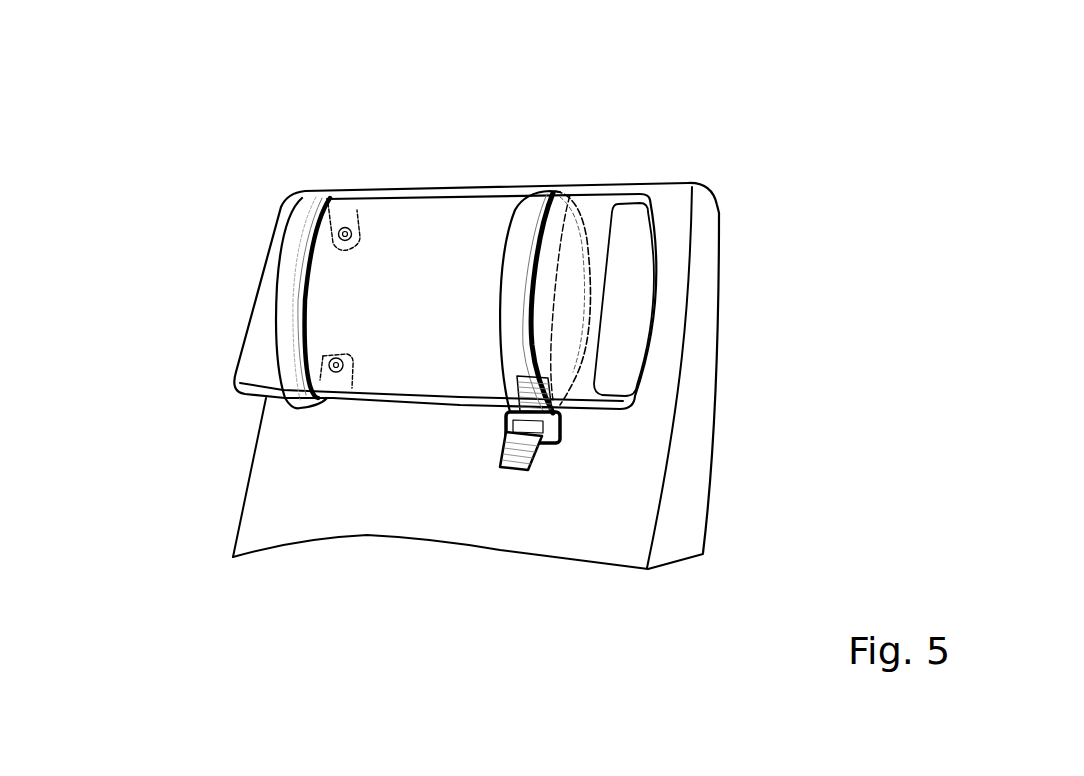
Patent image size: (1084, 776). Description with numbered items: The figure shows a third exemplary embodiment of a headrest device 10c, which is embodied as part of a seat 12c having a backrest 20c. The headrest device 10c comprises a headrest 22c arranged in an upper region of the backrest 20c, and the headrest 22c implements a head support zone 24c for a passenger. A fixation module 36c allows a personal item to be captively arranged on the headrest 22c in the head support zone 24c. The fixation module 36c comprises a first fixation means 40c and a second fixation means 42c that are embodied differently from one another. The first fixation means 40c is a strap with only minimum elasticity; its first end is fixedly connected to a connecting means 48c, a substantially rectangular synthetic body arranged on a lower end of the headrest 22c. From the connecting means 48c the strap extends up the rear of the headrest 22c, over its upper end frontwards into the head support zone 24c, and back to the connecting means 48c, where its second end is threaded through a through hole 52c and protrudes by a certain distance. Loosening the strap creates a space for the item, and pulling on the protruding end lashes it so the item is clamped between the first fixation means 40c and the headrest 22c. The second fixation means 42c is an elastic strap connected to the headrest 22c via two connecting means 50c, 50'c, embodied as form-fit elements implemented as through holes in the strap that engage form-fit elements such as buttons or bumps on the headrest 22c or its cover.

The headrest device 10c is at (240, 236).
The seat 12c is at (473, 140).
The backrest 20c is at (628, 507).
The headrest 22c is at (412, 222).
The head support zone 24c is at (426, 354).
The fixation module 36c is at (622, 243).
The first fixation means 40c is at (535, 210).
The second fixation means 42c is at (289, 302).
The connecting means 48c is at (559, 429).
The connecting means 50c is at (346, 222).
The connecting means 50'c is at (309, 485).
The through hole 52c is at (538, 440).